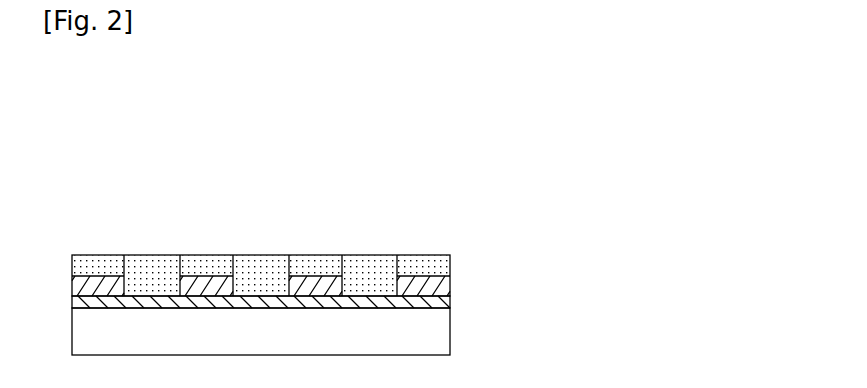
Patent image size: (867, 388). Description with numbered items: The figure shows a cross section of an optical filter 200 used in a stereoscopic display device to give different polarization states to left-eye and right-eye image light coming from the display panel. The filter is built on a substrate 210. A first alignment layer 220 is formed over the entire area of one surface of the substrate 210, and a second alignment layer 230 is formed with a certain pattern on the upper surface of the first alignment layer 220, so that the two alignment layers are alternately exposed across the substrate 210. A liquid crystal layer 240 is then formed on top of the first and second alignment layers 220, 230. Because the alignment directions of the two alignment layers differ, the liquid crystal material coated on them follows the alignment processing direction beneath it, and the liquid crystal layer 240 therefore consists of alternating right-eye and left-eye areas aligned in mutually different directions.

The optical filter 200 is at (548, 200).
The substrate 210 is at (445, 337).
The first alignment layer 220 is at (445, 300).
The second alignment layer 230 is at (445, 283).
The liquid crystal layer 240 is at (392, 157).